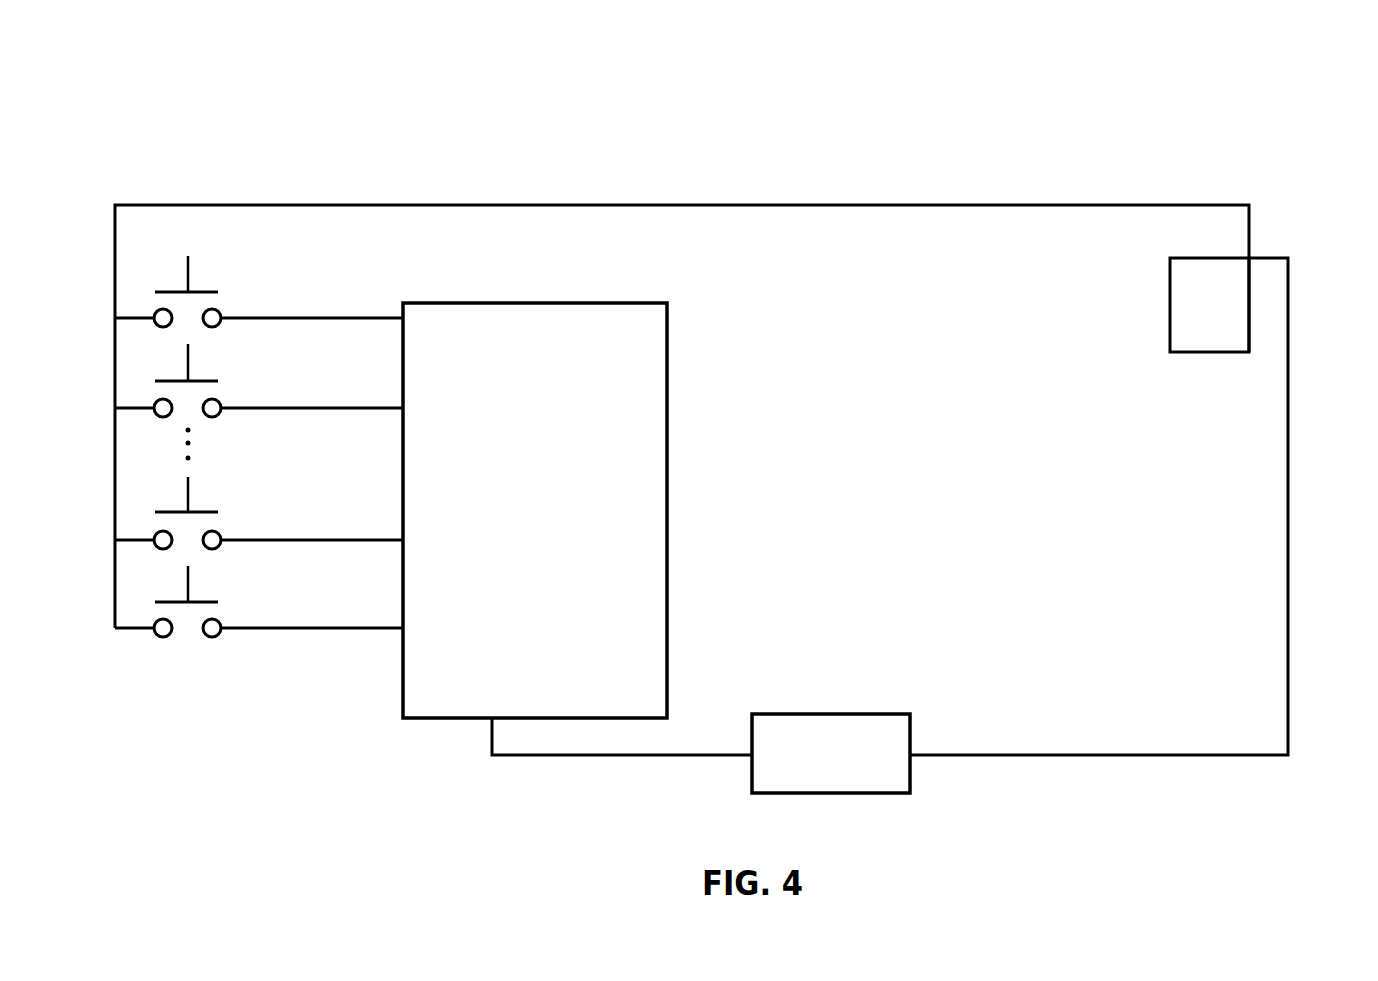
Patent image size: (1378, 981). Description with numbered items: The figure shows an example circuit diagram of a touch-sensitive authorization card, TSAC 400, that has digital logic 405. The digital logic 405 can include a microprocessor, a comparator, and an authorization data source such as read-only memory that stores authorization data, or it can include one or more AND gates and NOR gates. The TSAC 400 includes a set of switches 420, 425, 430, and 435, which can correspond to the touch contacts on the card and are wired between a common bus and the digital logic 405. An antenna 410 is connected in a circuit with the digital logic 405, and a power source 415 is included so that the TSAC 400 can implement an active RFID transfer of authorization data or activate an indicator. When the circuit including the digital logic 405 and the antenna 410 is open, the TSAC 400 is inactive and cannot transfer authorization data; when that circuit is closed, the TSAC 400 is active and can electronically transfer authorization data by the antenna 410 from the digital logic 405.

The TSAC 400 is at (244, 97).
The digital logic 405 is at (555, 538).
The antenna 410 is at (1309, 241).
The power source 415 is at (852, 780).
The switch 420 is at (232, 248).
The switch 425 is at (222, 357).
The switch 430 is at (222, 490).
The switch 435 is at (214, 578).